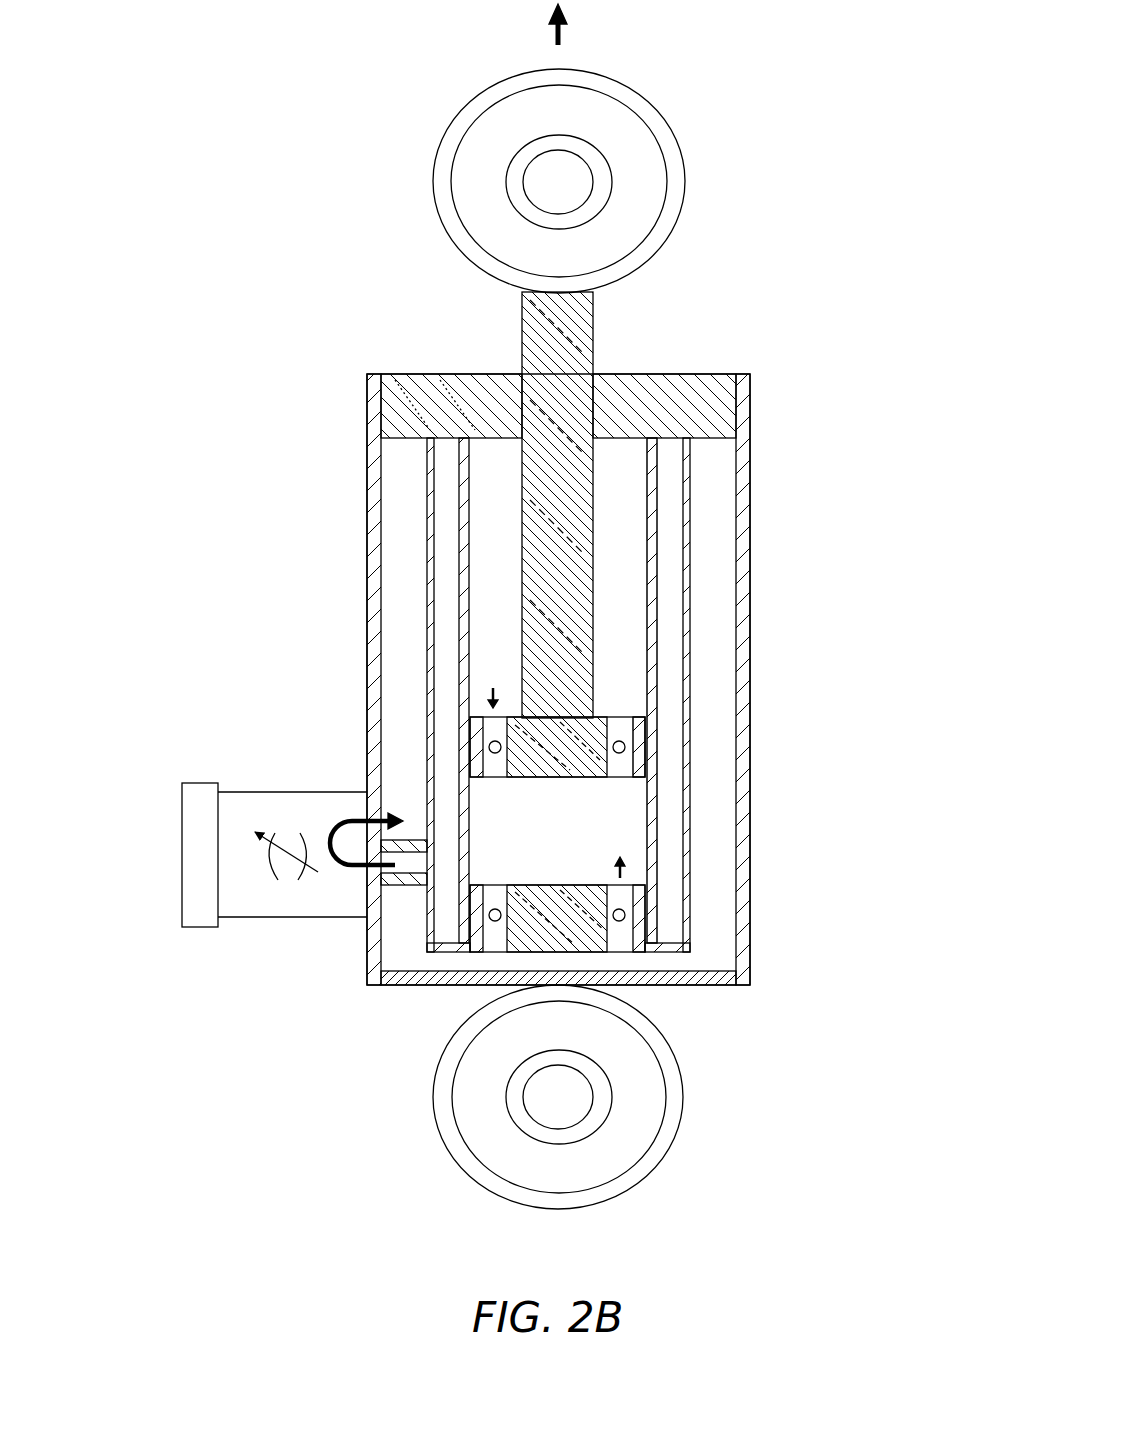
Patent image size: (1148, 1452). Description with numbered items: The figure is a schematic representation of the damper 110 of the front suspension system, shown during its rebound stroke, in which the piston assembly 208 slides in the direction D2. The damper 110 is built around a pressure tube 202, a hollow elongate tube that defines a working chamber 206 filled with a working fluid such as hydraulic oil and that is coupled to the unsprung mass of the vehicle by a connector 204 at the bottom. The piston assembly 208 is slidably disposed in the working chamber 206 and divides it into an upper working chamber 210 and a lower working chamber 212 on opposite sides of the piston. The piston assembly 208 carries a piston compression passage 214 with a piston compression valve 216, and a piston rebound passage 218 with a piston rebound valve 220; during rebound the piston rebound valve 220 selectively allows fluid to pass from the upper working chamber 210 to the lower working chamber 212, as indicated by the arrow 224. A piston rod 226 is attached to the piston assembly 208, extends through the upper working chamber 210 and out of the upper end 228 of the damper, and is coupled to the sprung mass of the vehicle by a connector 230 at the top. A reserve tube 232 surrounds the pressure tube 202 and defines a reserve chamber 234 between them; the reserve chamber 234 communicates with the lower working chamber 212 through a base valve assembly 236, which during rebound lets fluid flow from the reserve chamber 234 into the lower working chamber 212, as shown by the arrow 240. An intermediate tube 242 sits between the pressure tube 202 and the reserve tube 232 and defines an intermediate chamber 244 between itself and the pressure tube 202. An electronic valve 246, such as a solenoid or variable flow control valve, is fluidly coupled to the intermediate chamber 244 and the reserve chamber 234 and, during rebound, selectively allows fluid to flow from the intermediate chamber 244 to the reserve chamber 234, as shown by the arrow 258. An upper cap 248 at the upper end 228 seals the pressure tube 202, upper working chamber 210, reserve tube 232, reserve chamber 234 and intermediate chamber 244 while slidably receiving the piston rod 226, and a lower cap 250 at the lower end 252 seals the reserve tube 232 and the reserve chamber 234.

The damper 110 is at (824, 70).
The direction D2 is at (562, 28).
The connector 230 is at (651, 133).
The piston rod 226 is at (572, 325).
The upper end 228 is at (758, 372).
The upper cap 248 is at (405, 380).
The reserve tube 232 is at (752, 752).
The lower cap 250 is at (703, 985).
The lower end 252 is at (760, 992).
The intermediate tube 242 is at (427, 520).
The intermediate chamber 244 is at (460, 578).
The pressure tube 202 is at (657, 496).
The working chamber 206 is at (620, 470).
The upper working chamber 210 is at (505, 487).
The piston assembly 208 is at (555, 713).
The piston rebound passage 218 is at (482, 762).
The piston rebound valve 220 is at (489, 747).
The piston compression valve 216 is at (625, 747).
The piston compression passage 214 is at (640, 722).
The arrow 224 is at (493, 688).
The lower working chamber 212 is at (618, 826).
The arrow 240 is at (622, 868).
The base valve assembly 236 is at (570, 958).
The reserve chamber 234 is at (414, 927).
The arrow 258 is at (352, 868).
The electronic valve 246 is at (190, 905).
The connector 204 is at (683, 1093).